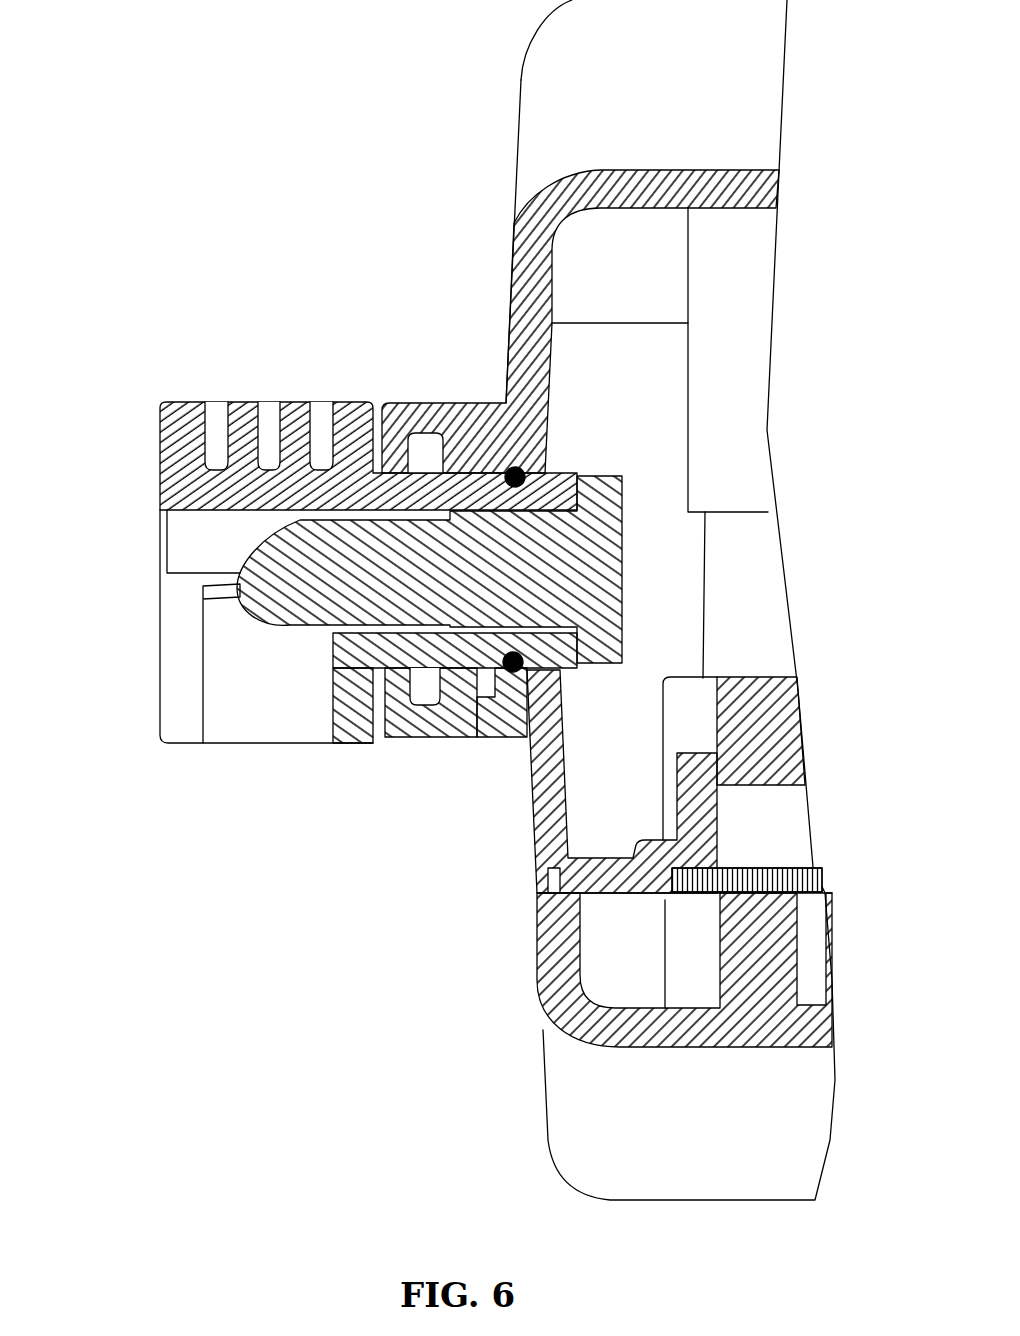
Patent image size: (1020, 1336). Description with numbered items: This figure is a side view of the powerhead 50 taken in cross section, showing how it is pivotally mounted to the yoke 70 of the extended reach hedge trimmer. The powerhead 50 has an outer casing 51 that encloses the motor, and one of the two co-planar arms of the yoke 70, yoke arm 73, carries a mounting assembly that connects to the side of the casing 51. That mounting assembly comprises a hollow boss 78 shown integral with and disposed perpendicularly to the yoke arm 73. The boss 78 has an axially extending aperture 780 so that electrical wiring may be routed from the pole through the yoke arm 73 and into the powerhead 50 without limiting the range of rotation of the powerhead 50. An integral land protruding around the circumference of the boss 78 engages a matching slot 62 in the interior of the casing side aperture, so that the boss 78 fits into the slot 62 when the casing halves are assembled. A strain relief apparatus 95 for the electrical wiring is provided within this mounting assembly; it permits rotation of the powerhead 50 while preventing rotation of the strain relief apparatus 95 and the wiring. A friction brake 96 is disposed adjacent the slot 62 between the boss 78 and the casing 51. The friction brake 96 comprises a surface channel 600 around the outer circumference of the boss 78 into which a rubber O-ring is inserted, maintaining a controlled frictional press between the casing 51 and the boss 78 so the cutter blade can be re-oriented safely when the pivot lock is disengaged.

The powerhead 50 is at (519, 80).
The outer casing 51 is at (530, 348).
The surface channel 600 is at (510, 470).
The yoke arm 73 is at (210, 492).
The axially extending aperture 780 is at (298, 526).
The yoke 70 is at (157, 643).
The strain relief apparatus 95 is at (332, 667).
The slot 62 is at (413, 705).
The hollow boss 78 is at (473, 643).
The friction brake 96 is at (492, 700).